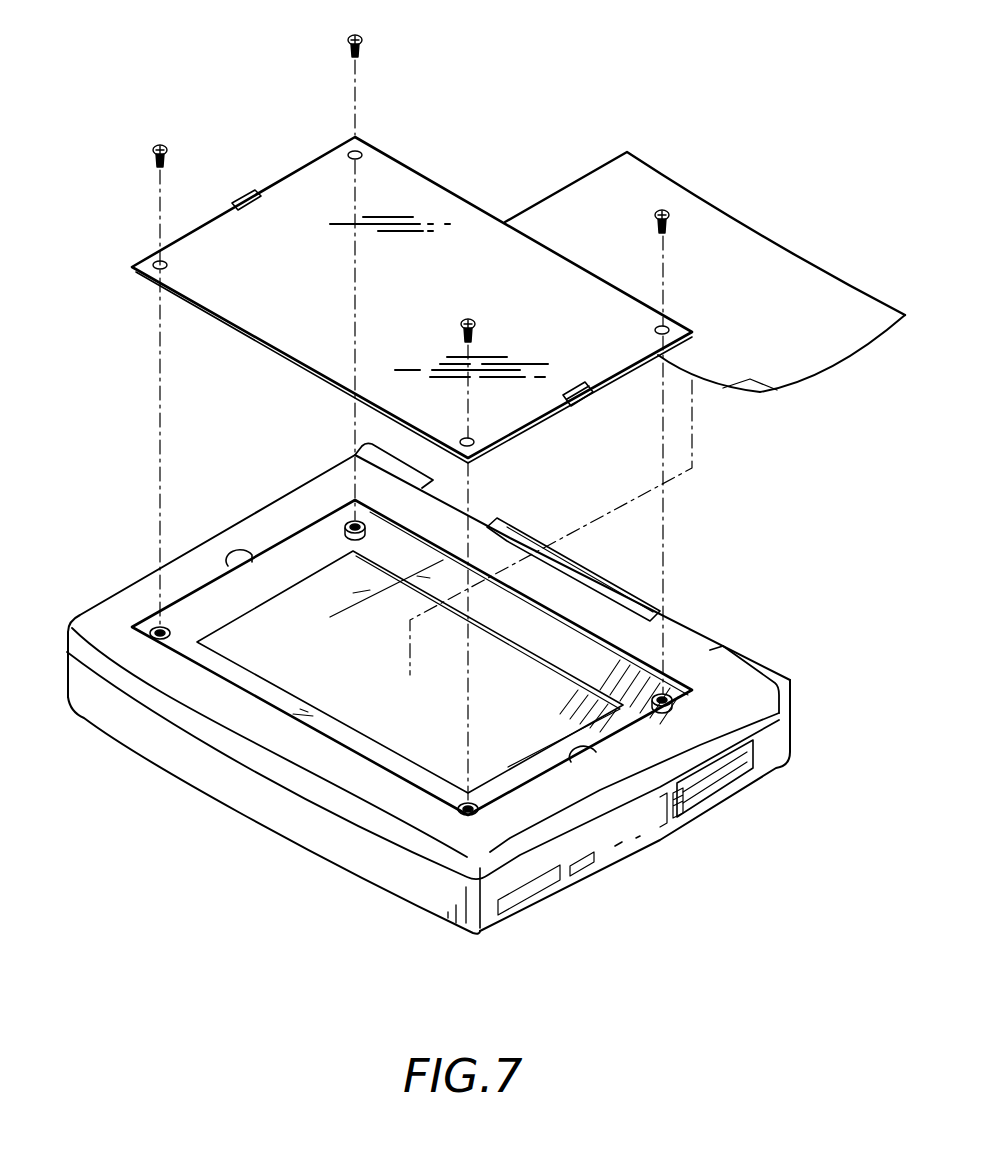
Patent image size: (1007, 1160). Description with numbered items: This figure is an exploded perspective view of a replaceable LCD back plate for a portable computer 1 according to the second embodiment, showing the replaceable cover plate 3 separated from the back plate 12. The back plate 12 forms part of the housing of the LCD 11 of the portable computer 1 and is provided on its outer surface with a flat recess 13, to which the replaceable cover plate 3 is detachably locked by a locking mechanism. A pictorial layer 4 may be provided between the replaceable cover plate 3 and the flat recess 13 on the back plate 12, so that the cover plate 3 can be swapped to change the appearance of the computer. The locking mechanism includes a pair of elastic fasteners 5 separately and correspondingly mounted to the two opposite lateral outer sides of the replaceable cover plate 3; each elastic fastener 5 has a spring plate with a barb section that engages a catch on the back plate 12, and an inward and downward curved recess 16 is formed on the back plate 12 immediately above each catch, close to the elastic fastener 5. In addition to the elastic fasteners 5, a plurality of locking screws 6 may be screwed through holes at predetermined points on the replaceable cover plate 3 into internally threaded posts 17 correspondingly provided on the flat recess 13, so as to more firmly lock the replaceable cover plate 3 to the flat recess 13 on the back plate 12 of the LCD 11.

The portable computer 1 is at (358, 855).
The replaceable cover plate 3 is at (478, 232).
The pictorial layer 4 is at (812, 298).
The elastic fastener 5 is at (215, 168).
The locking screw 6 is at (160, 143).
The LCD 11 is at (225, 740).
The back plate 12 is at (183, 682).
The flat recess 13 is at (420, 738).
The curved recess 16 is at (240, 560).
The internally threaded post 17 is at (158, 628).